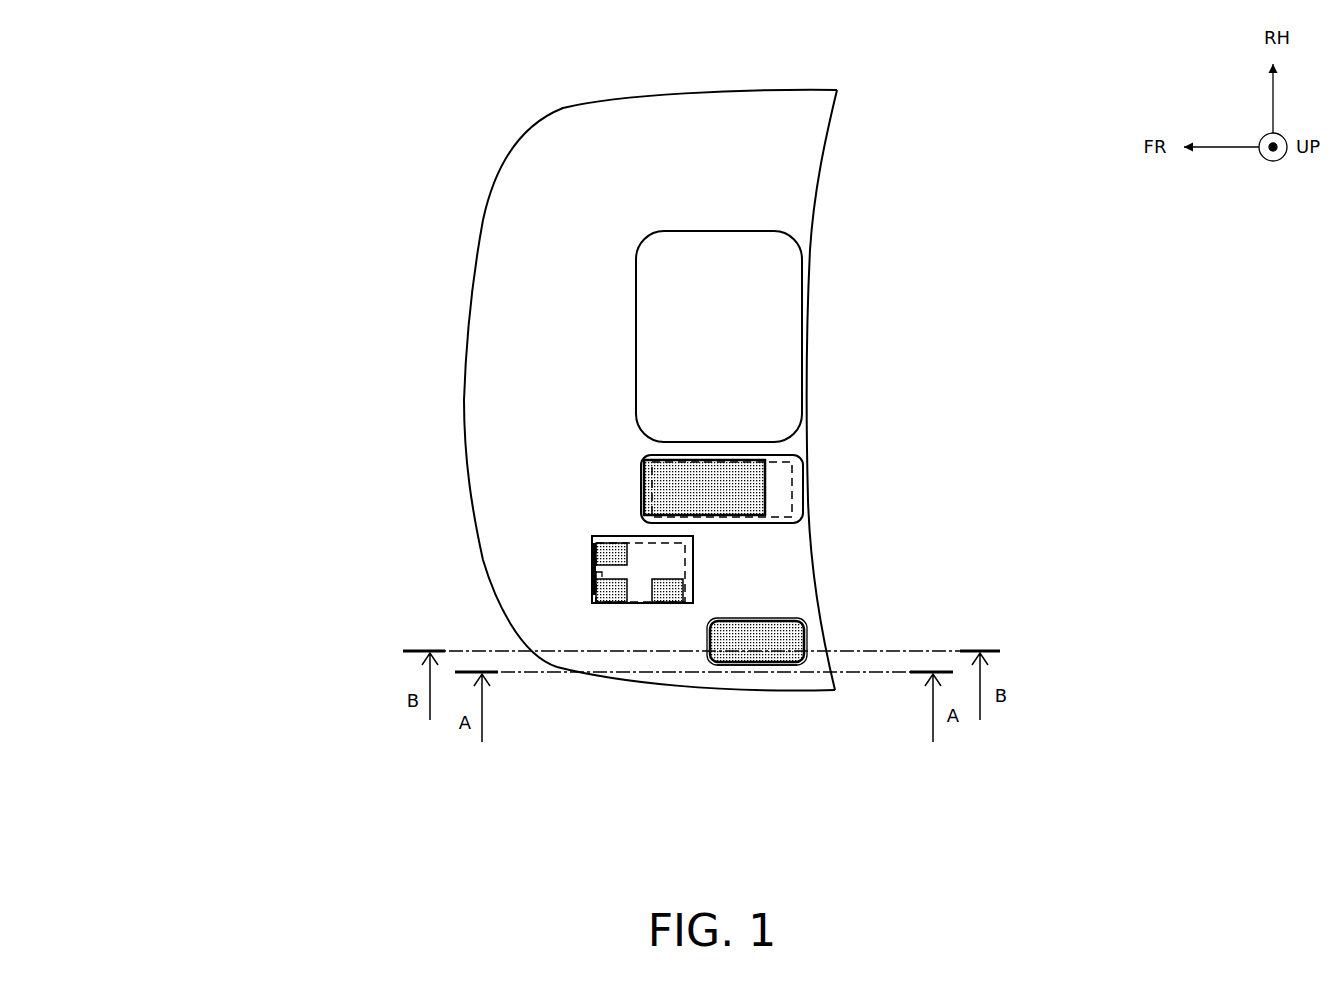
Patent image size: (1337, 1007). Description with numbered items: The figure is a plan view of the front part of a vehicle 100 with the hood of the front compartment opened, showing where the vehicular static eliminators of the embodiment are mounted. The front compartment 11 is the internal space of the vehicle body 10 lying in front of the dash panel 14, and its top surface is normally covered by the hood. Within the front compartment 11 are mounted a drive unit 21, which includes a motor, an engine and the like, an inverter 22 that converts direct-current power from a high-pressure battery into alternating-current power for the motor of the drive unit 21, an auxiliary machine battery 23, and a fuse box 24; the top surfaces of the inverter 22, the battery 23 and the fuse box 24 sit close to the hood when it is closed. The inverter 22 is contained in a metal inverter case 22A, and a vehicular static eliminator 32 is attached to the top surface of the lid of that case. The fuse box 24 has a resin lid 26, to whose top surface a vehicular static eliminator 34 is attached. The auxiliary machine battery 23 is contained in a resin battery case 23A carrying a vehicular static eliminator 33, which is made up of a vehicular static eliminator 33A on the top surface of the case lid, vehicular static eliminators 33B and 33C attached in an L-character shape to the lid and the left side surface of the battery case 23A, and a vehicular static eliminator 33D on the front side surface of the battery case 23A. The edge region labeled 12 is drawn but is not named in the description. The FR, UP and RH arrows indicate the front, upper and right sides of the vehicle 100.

The vehicle 100 is at (268, 168).
The vehicle body 10 is at (676, 89).
The front compartment 11 is at (562, 138).
The front edge 12 is at (463, 368).
The dash panel 14 is at (822, 158).
The drive unit 21 is at (753, 230).
The inverter 22 is at (793, 503).
The inverter case 22A is at (797, 462).
The vehicular static eliminator 32 is at (765, 493).
The auxiliary machine battery 23 is at (688, 563).
The battery case 23A is at (623, 537).
The vehicular static eliminator 33 is at (487, 838).
The vehicular static eliminator 33A is at (607, 603).
The vehicular static eliminator 33B is at (623, 603).
The vehicular static eliminator 33C is at (665, 603).
The vehicular static eliminator 33D is at (592, 573).
The fuse box 24 is at (814, 638).
The vehicular static eliminator 34 is at (783, 622).
The lid 26 is at (790, 667).